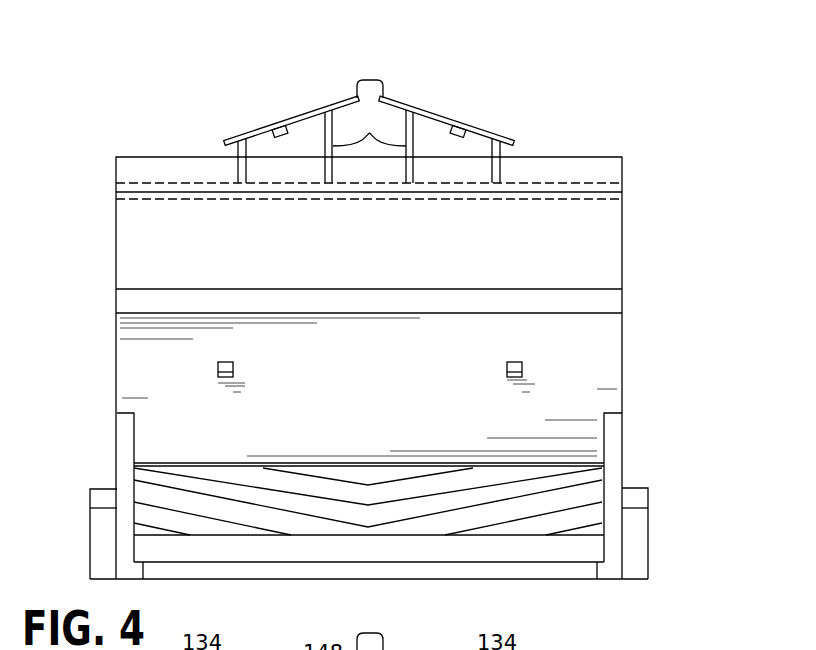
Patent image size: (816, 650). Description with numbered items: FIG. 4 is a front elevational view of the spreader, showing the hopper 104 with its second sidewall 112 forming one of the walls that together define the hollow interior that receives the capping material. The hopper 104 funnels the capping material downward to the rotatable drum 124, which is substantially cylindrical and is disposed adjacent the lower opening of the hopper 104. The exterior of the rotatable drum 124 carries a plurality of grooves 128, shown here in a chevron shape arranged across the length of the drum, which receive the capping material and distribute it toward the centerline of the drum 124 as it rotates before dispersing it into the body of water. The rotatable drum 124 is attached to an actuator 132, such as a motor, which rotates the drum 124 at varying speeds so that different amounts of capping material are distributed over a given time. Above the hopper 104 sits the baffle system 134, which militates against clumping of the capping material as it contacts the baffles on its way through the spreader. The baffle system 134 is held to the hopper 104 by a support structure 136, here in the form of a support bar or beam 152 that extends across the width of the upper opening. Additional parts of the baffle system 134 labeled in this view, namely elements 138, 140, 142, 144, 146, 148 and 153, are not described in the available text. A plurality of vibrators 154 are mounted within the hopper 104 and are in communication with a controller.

The hopper 104 is at (609, 271).
The second sidewall 112 is at (136, 262).
The rotatable drum 124 is at (597, 477).
The grooves 128 is at (143, 480).
The actuator 132 is at (648, 517).
The baffle system 134 is at (381, 74).
The support structure 136 is at (500, 154).
The first panel 138 is at (303, 88).
The second panel 140 is at (466, 105).
The upper panel end 142 is at (350, 80).
The lower panel end 144 is at (226, 121).
The support leg 146 is at (407, 156).
The cap 148 is at (367, 80).
The support bar or beam 152 is at (598, 183).
The gap 153 is at (369, 128).
The vibrators 154 is at (218, 370).